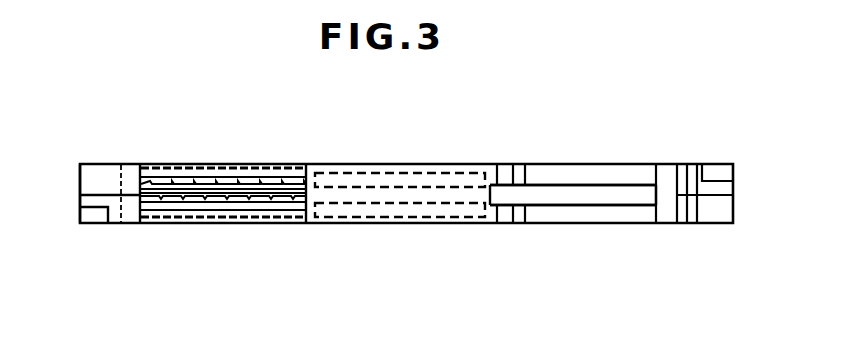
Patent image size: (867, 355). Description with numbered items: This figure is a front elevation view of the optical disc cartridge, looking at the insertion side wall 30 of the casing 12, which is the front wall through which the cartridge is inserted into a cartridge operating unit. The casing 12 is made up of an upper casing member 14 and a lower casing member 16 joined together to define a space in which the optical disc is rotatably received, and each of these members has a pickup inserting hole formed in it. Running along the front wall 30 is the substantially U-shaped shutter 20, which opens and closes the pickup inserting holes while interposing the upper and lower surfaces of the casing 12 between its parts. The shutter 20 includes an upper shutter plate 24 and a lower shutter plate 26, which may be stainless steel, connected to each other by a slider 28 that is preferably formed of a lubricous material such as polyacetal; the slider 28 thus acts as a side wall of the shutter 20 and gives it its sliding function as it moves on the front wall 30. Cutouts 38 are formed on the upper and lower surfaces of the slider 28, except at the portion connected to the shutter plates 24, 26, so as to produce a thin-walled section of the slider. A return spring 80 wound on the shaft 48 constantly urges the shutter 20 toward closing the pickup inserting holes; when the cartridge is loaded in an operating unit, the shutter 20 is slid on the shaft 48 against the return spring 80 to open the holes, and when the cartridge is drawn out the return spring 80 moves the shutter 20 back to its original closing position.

The casing 12 is at (75, 195).
The upper casing member 14 is at (104, 172).
The lower casing member 16 is at (728, 208).
The shutter 20 is at (525, 120).
The upper shutter plate 24 is at (377, 173).
The lower shutter plate 26 is at (367, 223).
The slider 28 is at (432, 187).
The insertion side wall 30 is at (410, 203).
The cutouts 38 is at (617, 172).
The shaft 48 is at (242, 187).
The return spring 80 is at (192, 187).